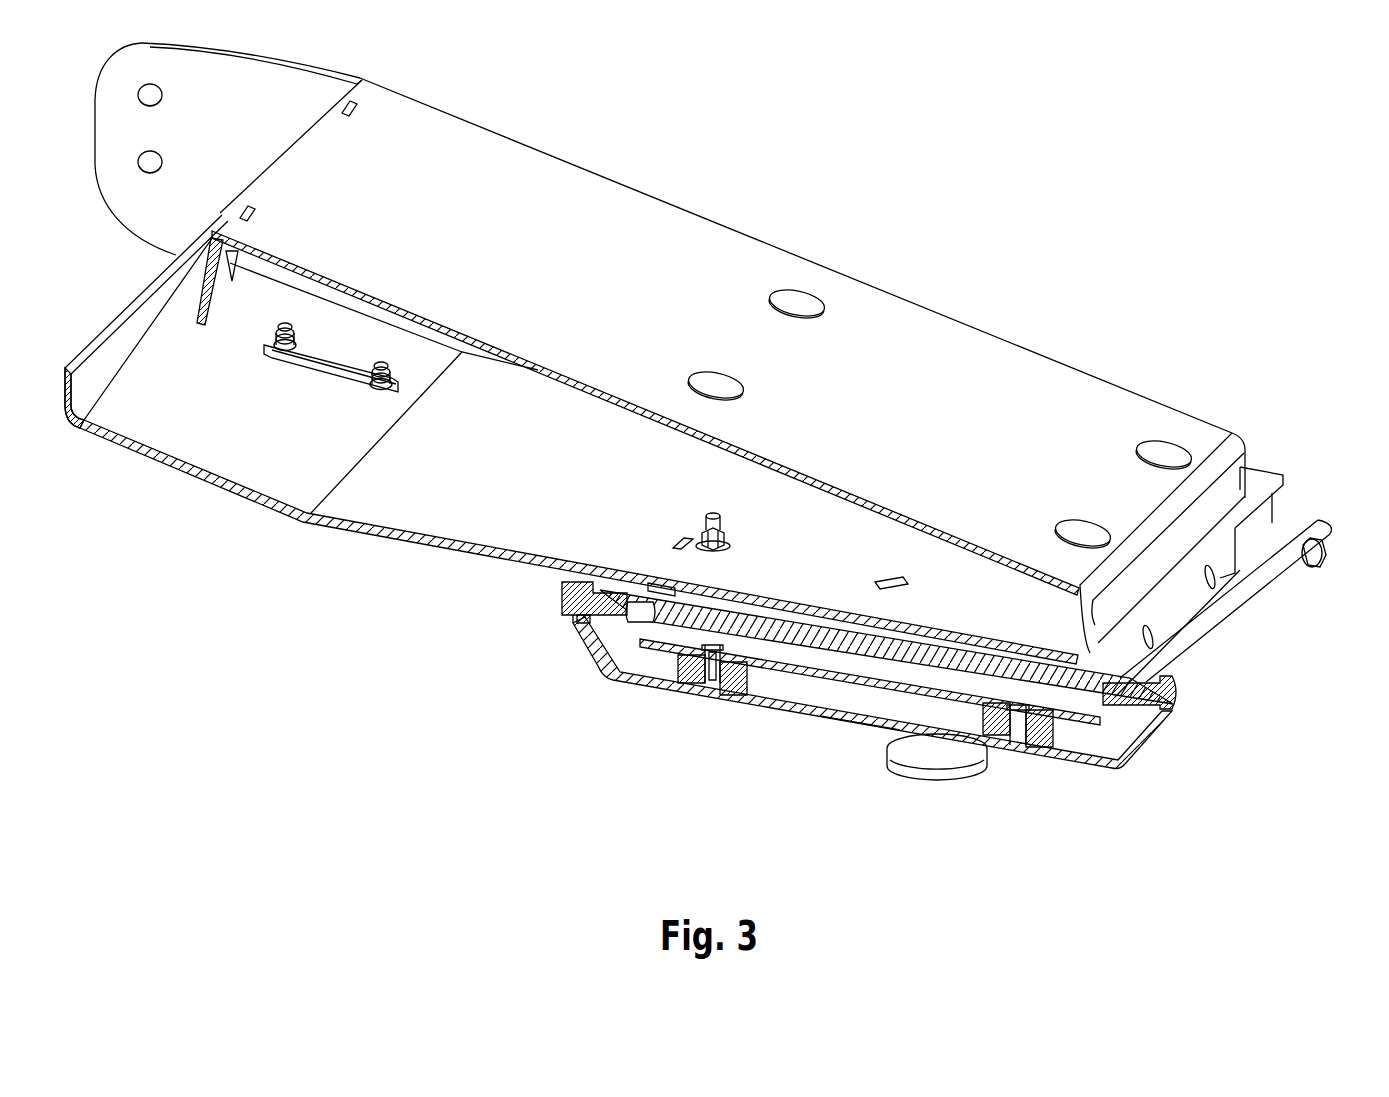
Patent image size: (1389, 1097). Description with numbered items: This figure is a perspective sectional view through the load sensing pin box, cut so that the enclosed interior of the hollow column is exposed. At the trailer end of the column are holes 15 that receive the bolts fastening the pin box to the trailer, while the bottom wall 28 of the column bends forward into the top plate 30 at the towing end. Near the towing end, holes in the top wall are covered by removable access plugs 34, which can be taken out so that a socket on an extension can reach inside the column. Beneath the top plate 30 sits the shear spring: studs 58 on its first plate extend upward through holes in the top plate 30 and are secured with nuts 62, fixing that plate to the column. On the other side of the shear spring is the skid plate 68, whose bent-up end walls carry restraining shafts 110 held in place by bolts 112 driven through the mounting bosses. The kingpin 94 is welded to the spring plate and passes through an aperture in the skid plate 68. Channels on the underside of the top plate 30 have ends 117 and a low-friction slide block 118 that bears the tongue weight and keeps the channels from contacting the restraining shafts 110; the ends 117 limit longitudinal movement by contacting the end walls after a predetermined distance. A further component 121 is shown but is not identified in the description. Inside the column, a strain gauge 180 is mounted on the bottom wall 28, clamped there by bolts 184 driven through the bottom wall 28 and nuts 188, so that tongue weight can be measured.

The holes 15 is at (137, 95).
The bottom wall 28 is at (153, 453).
The top plate 30 is at (458, 545).
The access plugs 34 is at (715, 386).
The studs 58 is at (712, 512).
The nuts 62 is at (735, 543).
The skid plate 68 is at (853, 722).
The kingpin 94 is at (937, 778).
The restraining shafts 110 is at (1268, 538).
The bolts 112 is at (1322, 562).
The ends 117 is at (595, 662).
The slide block 118 is at (677, 667).
The pin 121 is at (712, 692).
The strain gauge 180 is at (325, 382).
The bolts 184 is at (382, 364).
The nuts 188 is at (270, 352).